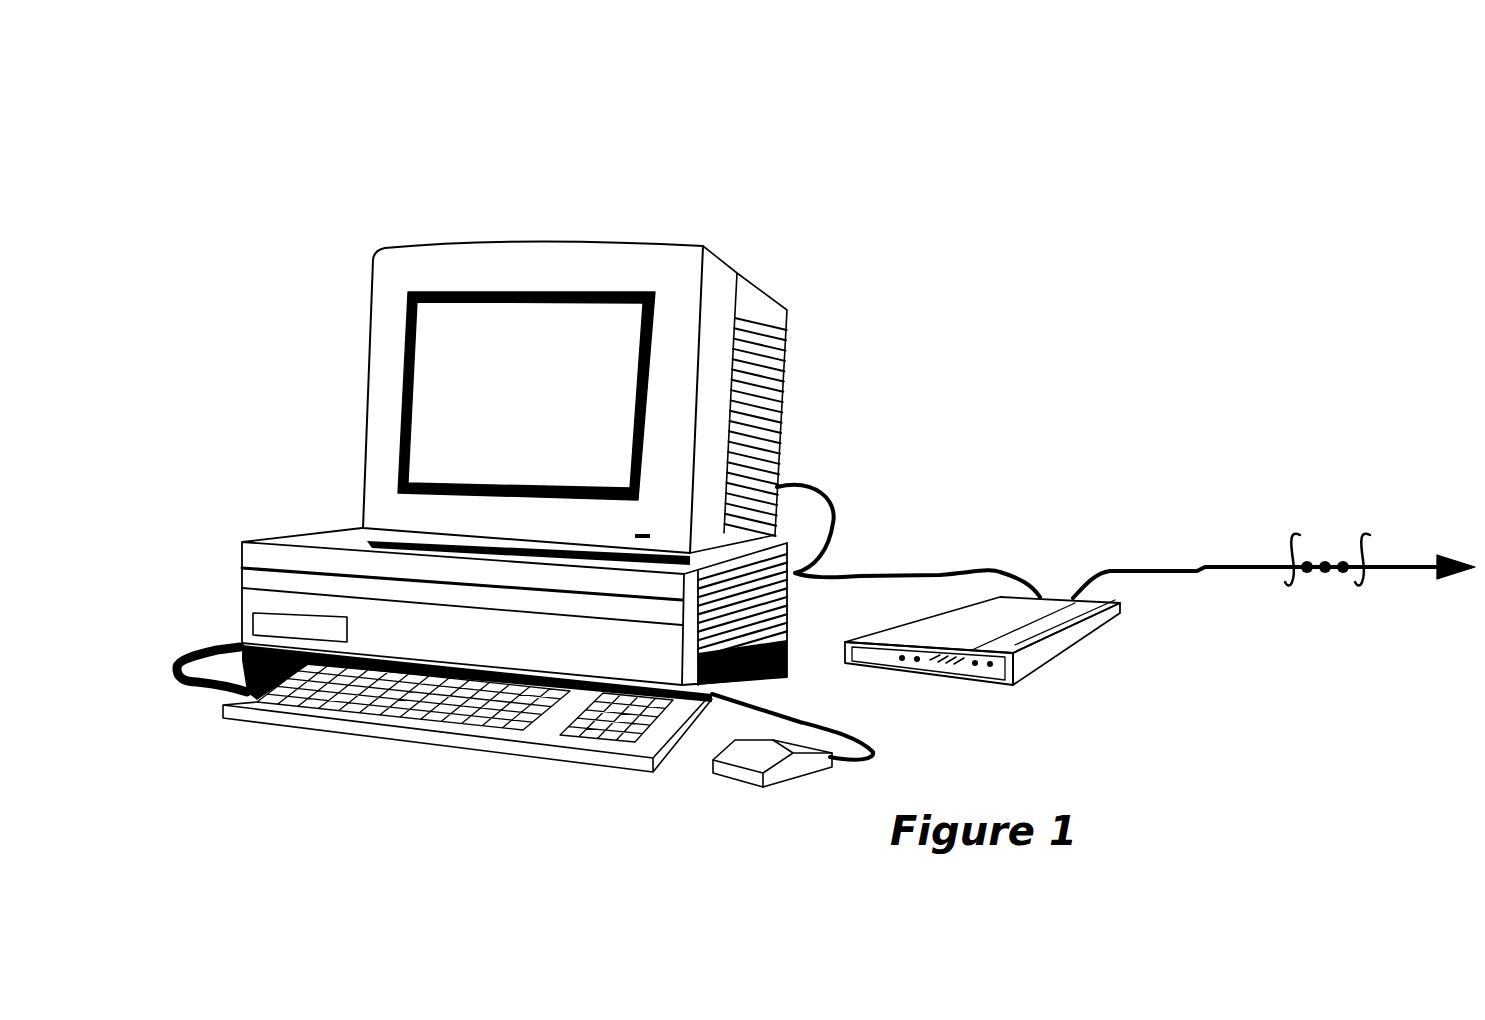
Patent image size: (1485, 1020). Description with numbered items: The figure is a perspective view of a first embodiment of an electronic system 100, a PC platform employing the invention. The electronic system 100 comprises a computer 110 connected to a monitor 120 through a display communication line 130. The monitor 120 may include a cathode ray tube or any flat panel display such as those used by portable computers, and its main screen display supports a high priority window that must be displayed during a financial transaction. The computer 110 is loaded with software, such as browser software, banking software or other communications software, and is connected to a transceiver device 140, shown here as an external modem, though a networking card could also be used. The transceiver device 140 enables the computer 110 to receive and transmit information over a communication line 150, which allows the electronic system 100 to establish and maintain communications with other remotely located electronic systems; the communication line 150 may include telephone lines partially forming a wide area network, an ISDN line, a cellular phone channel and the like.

The electronic system 100 is at (262, 250).
The computer 110 is at (203, 618).
The monitor 120 is at (513, 240).
The display communication line 130 is at (810, 488).
The transceiver device 140 is at (1050, 612).
The communication line 150 is at (1322, 634).